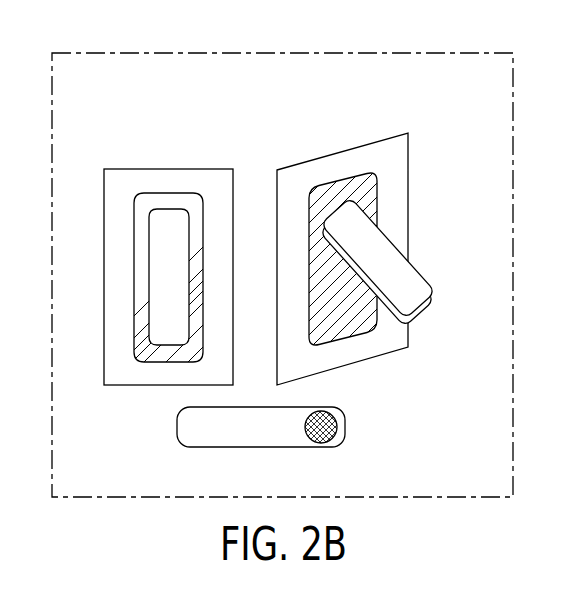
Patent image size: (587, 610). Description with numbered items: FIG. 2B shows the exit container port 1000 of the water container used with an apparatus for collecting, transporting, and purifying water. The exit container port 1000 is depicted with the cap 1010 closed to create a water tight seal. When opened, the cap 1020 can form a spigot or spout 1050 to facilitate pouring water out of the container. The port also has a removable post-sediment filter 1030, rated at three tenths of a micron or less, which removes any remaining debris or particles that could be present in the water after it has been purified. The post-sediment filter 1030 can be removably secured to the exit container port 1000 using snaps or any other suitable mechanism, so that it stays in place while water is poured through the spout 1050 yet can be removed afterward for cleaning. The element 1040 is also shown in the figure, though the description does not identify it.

The exit container port 1000 is at (158, 168).
The cap 1010 is at (162, 332).
The cap 1020 is at (402, 153).
The post-sediment filter 1030 is at (350, 328).
The pin 1040 is at (325, 425).
The spigot or spout 1050 is at (423, 273).